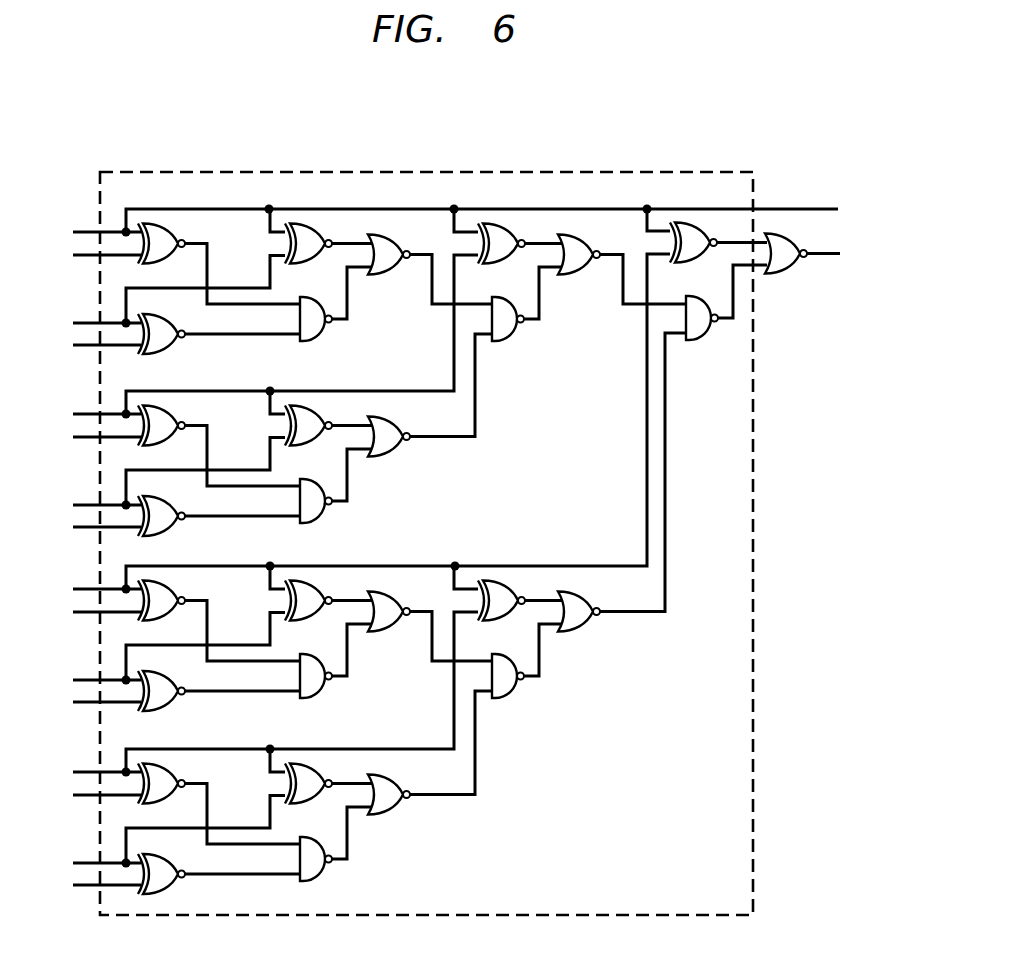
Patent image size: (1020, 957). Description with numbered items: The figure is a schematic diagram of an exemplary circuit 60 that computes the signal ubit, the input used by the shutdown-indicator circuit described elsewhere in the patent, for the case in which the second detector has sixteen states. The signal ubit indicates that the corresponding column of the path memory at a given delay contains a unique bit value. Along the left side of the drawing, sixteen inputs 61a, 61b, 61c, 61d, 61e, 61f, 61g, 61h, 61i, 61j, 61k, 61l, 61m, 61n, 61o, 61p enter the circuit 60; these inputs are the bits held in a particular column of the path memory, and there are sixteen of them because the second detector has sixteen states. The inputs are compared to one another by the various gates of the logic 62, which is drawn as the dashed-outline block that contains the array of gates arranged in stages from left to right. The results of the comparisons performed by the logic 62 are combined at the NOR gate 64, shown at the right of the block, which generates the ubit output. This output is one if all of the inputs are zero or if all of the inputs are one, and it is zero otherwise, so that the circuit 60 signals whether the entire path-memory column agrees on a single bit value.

The circuit 60 is at (765, 101).
The logic 62 is at (607, 169).
The NOR gate 64 is at (783, 271).
The input 61a is at (87, 228).
The input 61b is at (87, 251).
The input 61c is at (87, 319).
The input 61d is at (87, 341).
The input 61e is at (87, 410).
The input 61f is at (87, 433).
The input 61g is at (87, 501).
The input 61h is at (87, 523).
The input 61i is at (88, 585).
The input 61j is at (88, 608).
The input 61k is at (87, 676).
The input 61l is at (88, 698).
The input 61m is at (85, 768).
The input 61n is at (87, 791).
The input 61o is at (87, 859).
The input 61p is at (87, 881).